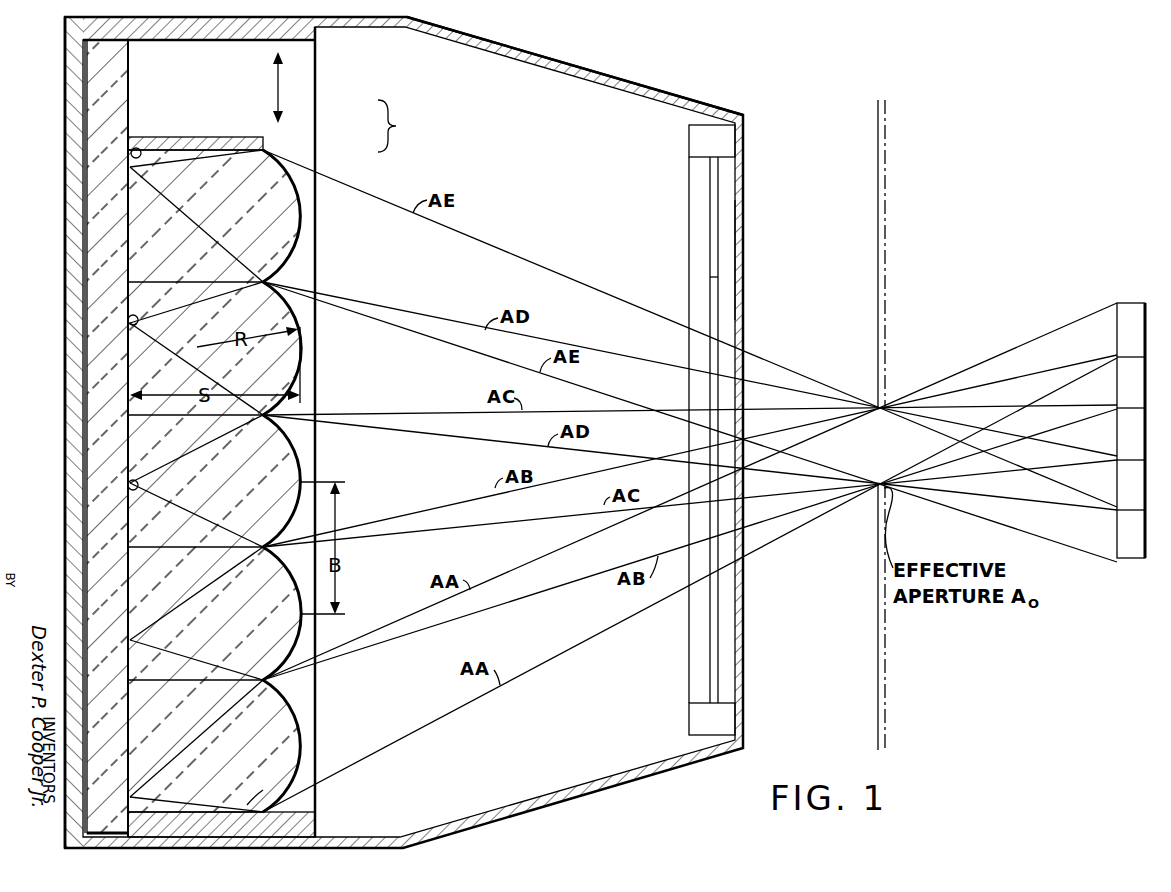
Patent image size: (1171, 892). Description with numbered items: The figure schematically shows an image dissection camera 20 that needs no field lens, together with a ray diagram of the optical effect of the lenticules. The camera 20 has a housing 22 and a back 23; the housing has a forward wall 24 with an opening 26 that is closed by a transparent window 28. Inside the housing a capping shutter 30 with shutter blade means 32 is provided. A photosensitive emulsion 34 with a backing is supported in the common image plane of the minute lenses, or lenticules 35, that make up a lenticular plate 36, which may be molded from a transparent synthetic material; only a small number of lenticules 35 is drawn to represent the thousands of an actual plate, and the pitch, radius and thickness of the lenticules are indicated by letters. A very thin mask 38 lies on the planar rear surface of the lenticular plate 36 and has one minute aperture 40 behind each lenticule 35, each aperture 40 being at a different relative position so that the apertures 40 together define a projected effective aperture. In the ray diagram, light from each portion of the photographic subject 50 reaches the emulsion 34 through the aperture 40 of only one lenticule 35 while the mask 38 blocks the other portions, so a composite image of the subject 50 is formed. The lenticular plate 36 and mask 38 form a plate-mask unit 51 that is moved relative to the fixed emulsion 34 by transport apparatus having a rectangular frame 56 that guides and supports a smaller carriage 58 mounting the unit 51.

The image dissection camera 20 is at (672, 89).
The housing 22 is at (583, 72).
The back 23 is at (72, 215).
The forward wall 24 is at (745, 122).
The opening 26 is at (741, 298).
The transparent window 28 is at (745, 327).
The capping shutter 30 is at (718, 140).
The shutter blade means 32 is at (712, 197).
The photosensitive emulsion 34 is at (100, 380).
The lenticules 35 is at (300, 262).
The lenticular plate 36 is at (285, 150).
The mask 38 is at (198, 470).
The apertures 40 is at (133, 148).
The photographic subject 50 is at (1134, 316).
The lenticular plate-mask unit 51 is at (400, 126).
The rectangular frame 56 is at (297, 828).
The carriage 58 is at (232, 800).